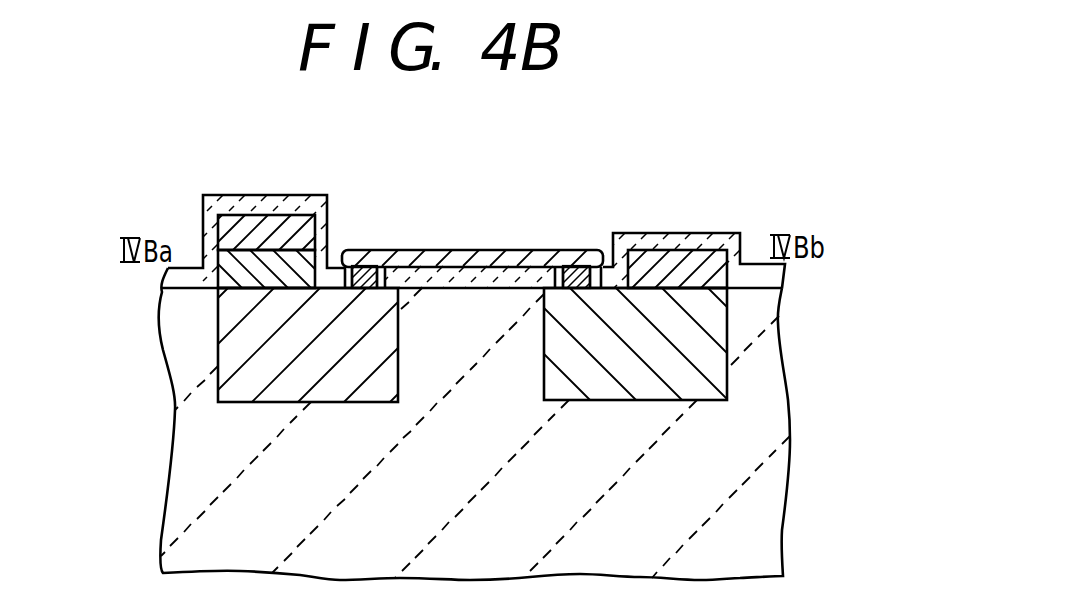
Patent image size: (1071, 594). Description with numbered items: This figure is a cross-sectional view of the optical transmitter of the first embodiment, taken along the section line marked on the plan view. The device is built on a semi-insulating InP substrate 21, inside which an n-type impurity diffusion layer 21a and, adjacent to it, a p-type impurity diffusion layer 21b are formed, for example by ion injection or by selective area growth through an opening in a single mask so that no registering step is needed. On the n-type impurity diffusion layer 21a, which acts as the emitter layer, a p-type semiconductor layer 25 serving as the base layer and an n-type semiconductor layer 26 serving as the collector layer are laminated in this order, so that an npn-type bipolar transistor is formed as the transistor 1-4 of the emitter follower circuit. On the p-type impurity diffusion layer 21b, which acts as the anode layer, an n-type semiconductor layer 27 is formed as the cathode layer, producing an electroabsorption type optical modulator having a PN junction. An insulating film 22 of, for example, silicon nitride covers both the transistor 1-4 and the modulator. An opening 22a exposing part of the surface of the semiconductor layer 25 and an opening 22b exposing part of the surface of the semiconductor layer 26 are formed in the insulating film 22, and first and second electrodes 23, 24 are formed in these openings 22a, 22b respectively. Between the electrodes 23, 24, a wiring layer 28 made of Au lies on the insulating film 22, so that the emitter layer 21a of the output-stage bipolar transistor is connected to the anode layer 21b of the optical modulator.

The transistor 1-4 is at (279, 170).
The InP substrate 21 is at (786, 444).
The n-type impurity diffusion layer 21a is at (232, 340).
The p-type impurity diffusion layer 21b is at (710, 337).
The insulating film 22 is at (324, 208).
The opening 22a is at (375, 256).
The opening 22b is at (583, 238).
The first electrode 23 is at (366, 270).
The second electrode 24 is at (567, 265).
The p-type semiconductor layer 25 is at (248, 289).
The n-type semiconductor layer 26 is at (227, 214).
The n-type semiconductor layer 27 is at (662, 256).
The wiring layer 28 is at (458, 251).